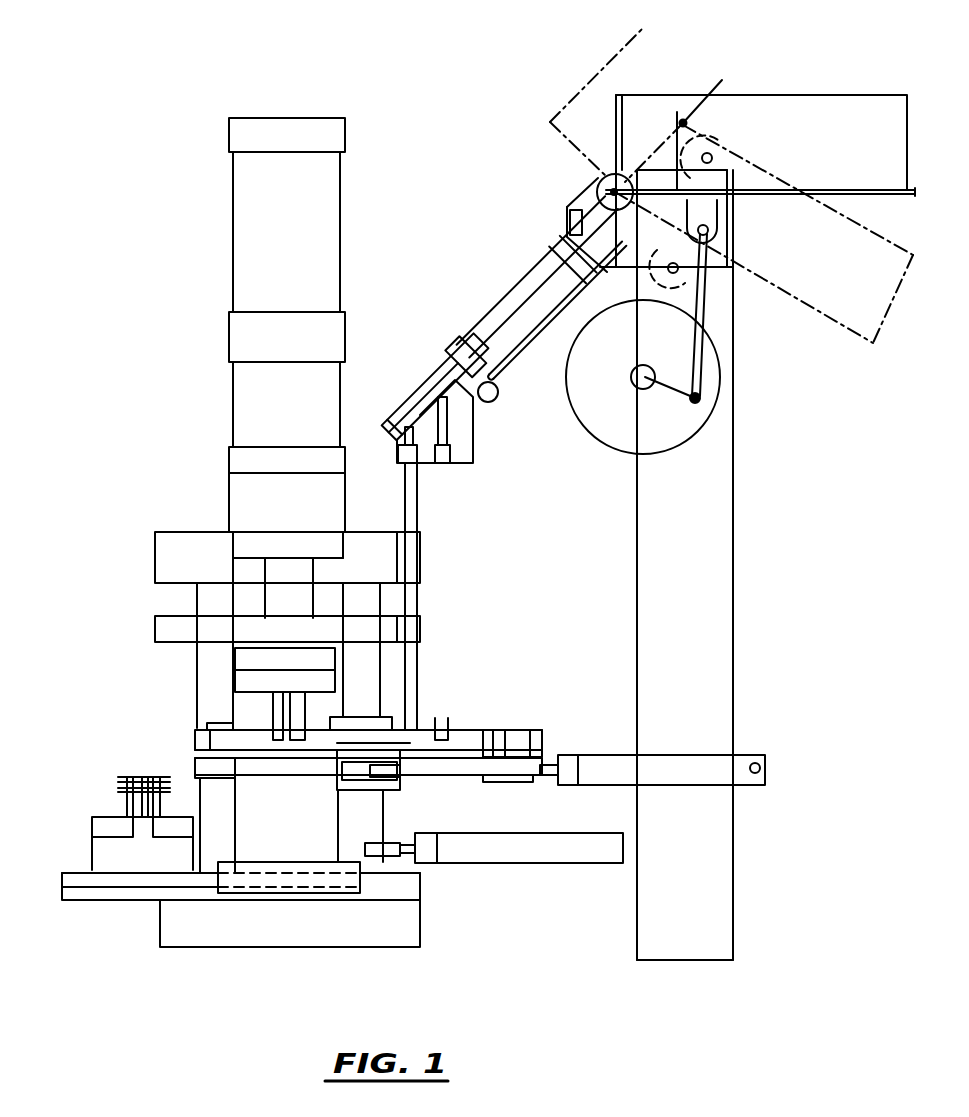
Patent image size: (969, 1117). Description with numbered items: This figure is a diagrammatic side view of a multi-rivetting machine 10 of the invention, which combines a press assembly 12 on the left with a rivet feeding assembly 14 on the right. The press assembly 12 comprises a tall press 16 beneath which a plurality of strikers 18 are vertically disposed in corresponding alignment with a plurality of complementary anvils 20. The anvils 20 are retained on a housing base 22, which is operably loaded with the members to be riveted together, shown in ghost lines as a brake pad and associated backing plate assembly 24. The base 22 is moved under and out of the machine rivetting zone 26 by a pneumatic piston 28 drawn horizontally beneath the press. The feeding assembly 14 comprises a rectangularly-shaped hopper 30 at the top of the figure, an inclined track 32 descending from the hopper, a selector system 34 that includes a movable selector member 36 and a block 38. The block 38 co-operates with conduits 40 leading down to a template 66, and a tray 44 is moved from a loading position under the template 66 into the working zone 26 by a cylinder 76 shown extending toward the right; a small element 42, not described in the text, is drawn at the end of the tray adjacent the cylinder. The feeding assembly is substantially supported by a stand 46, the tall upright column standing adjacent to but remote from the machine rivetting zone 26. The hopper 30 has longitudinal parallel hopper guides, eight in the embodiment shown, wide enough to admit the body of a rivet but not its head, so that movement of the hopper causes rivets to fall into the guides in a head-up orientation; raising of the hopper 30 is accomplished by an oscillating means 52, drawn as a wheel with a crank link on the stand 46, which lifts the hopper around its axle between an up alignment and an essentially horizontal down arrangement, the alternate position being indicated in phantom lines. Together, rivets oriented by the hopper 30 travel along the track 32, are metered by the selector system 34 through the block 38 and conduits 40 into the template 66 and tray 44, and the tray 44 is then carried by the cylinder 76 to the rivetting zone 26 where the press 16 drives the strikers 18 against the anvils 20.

The multi-rivetting machine 10 is at (206, 63).
The press assembly 12 is at (140, 550).
The feeding assembly 14 is at (535, 107).
The press 16 is at (276, 565).
The strikers 18 is at (277, 708).
The anvils 20 is at (298, 812).
The housing base 22 is at (267, 837).
The brake pad and associated backing plate assembly 24 is at (263, 787).
The machine rivetting zone 26 is at (322, 816).
The pneumatic piston 28 is at (577, 858).
The hopper 30 is at (775, 100).
The track 32 is at (538, 293).
The selector system 34 is at (482, 405).
The movable selector member 36 is at (457, 353).
The block 38 is at (420, 390).
The conduits 40 is at (417, 482).
The block 42 is at (508, 737).
The tray 44 is at (500, 740).
The stand 46 is at (733, 660).
The oscillating means 52 is at (695, 408).
The template 66 is at (423, 732).
The cylinder 76 is at (766, 776).